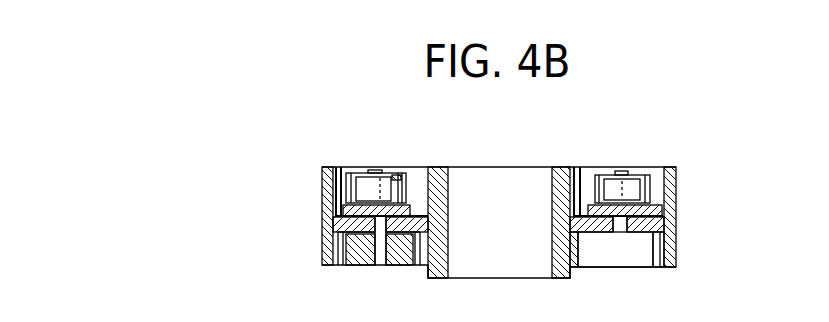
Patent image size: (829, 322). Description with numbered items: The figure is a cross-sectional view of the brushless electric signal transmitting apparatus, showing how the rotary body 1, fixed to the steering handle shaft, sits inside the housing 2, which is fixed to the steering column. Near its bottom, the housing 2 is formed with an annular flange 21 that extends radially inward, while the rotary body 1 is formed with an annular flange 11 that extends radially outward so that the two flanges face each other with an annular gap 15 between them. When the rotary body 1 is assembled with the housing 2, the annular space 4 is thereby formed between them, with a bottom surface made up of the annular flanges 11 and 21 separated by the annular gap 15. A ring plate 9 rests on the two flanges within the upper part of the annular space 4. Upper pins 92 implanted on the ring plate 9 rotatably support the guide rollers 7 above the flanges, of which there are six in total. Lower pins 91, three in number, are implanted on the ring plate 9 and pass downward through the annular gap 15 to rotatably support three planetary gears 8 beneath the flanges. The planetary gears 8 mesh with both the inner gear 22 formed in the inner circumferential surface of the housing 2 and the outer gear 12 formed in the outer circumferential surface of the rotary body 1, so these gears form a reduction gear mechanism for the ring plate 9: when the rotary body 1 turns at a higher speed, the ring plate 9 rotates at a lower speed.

The rotary body 1 is at (439, 170).
The housing 2 is at (328, 183).
The annular space 4 is at (356, 168).
The guide rollers 7 is at (396, 173).
The planetary gears 8 is at (398, 262).
The ring plate 9 is at (661, 209).
The lower pins 91 is at (378, 262).
The upper pins 92 is at (375, 169).
The annular flange 11 is at (600, 242).
The outer gear 12 is at (588, 256).
The annular gap 15 is at (622, 240).
The annular flange 21 is at (636, 234).
The inner gear 22 is at (657, 250).